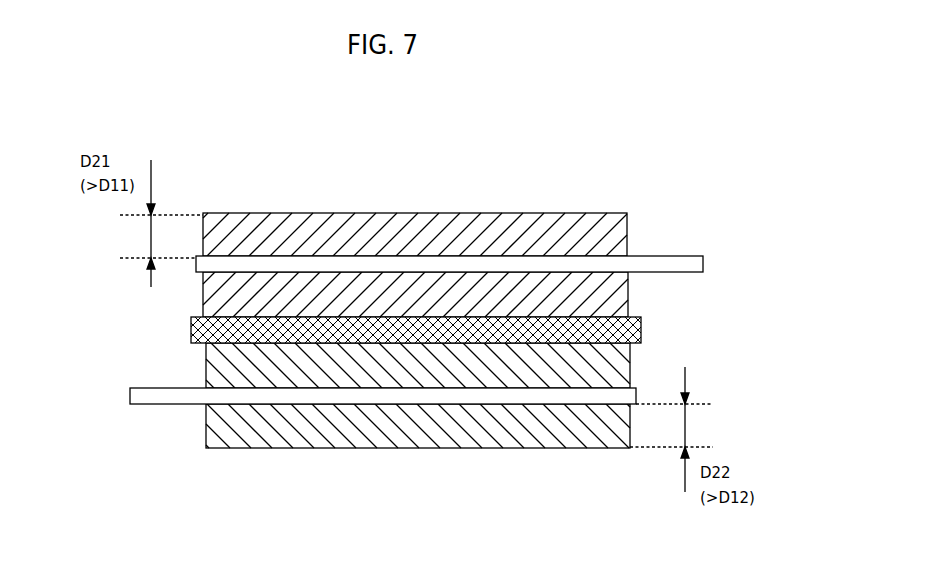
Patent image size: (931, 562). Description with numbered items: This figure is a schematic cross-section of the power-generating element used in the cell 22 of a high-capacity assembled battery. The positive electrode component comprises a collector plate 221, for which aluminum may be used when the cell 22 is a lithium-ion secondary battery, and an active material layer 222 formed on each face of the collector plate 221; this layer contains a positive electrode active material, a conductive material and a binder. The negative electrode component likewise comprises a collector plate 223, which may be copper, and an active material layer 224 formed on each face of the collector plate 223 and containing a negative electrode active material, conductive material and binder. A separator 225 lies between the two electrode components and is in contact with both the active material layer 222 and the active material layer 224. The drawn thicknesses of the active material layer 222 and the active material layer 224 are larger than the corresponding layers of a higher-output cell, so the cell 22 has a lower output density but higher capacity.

The cell 22 is at (739, 204).
The collector plate 221 is at (665, 262).
The active material layer 222 is at (390, 297).
The collector plate 223 is at (168, 398).
The active material layer 224 is at (468, 365).
The separator 225 is at (643, 331).